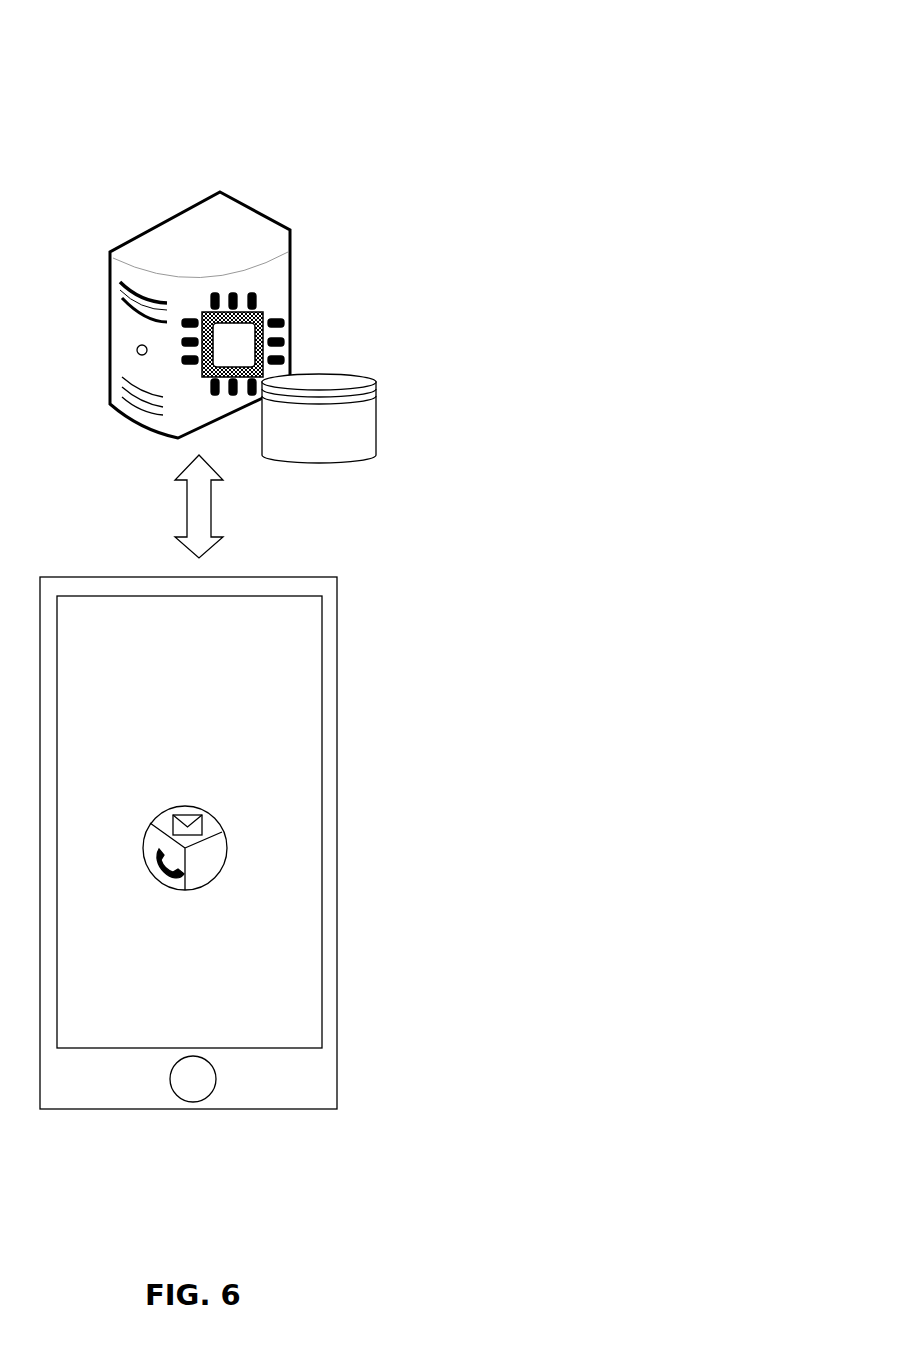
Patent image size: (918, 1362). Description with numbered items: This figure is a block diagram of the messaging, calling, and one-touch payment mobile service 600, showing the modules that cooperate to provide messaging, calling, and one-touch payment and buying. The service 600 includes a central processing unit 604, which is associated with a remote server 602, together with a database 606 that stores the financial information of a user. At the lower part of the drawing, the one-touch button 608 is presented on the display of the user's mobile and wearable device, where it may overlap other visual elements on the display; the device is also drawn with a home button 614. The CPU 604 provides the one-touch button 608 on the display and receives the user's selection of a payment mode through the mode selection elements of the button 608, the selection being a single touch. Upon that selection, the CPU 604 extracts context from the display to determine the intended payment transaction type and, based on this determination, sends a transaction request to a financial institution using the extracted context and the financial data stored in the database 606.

The messaging, calling, and one-touch payment mobile service 600 is at (602, 54).
The remote server 602 is at (142, 232).
The central processing unit (CPU) 604 is at (290, 323).
The database 606 is at (376, 420).
The one-touch button 608 is at (183, 805).
The home button 614 is at (230, 1079).